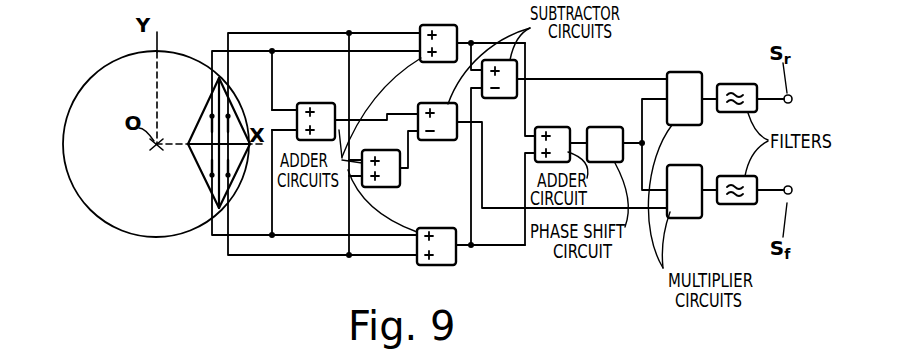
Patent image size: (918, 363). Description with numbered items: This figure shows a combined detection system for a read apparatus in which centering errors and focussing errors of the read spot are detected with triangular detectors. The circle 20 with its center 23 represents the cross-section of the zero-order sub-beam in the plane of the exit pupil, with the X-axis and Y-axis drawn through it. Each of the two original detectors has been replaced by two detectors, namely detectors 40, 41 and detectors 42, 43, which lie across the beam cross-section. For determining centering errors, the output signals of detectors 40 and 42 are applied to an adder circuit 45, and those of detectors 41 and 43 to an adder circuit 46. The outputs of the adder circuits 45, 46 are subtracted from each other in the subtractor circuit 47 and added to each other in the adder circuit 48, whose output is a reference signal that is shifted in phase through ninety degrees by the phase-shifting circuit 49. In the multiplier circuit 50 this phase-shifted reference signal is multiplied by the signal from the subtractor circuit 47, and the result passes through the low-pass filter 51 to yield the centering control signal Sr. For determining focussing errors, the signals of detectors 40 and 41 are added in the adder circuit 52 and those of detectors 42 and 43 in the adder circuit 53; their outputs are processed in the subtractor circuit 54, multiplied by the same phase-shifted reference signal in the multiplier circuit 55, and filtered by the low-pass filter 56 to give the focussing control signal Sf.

The circle 20 is at (147, 237).
The center 23 is at (151, 147).
The detector 40 is at (202, 131).
The detector 41 is at (200, 154).
The detector 42 is at (233, 125).
The detector 43 is at (233, 157).
The adder circuit 45 is at (440, 24).
The adder circuit 46 is at (437, 228).
The subtractor circuit 47 is at (489, 99).
The adder circuit 48 is at (551, 127).
The phase-shifting circuit 49 is at (598, 127).
The multiplier circuit 50 is at (685, 72).
The low-pass filter 51 is at (733, 84).
The adder circuit 52 is at (318, 103).
The adder circuit 53 is at (372, 150).
The subtractor circuit 54 is at (434, 103).
The multiplier circuit 55 is at (683, 218).
The low-pass filter 56 is at (738, 204).